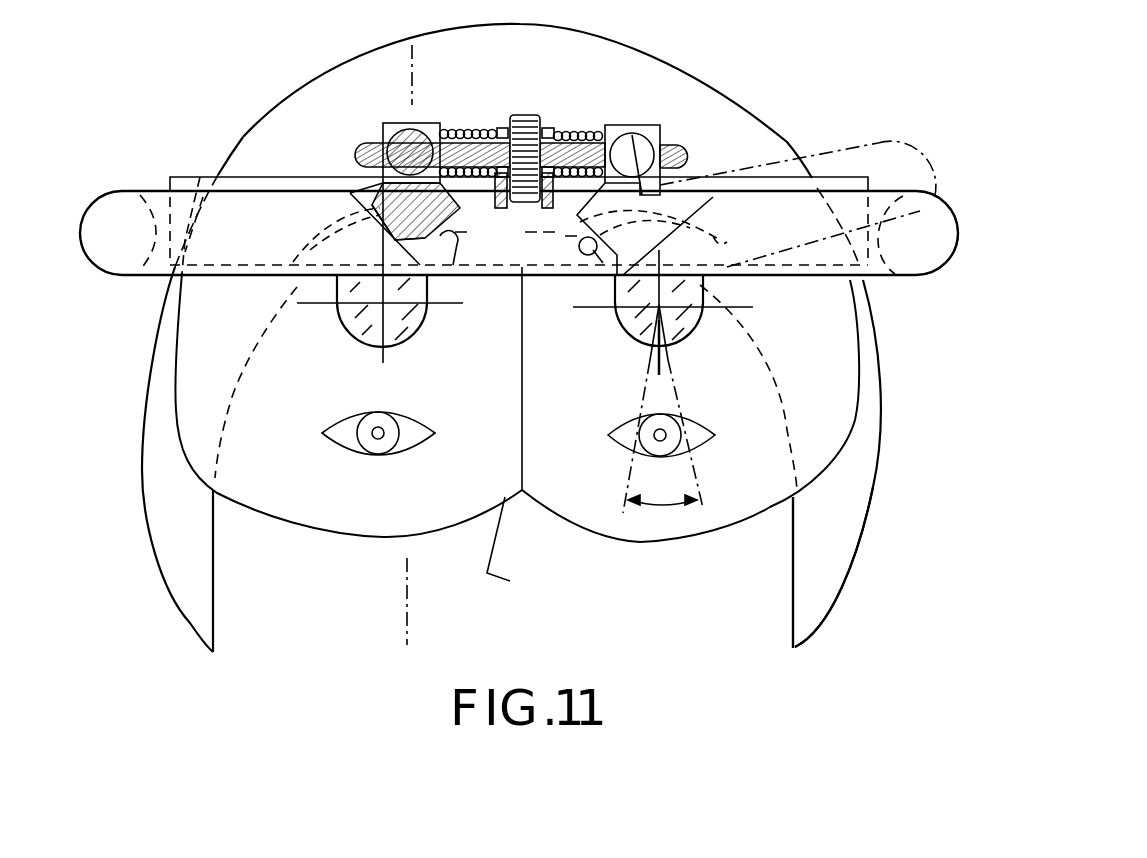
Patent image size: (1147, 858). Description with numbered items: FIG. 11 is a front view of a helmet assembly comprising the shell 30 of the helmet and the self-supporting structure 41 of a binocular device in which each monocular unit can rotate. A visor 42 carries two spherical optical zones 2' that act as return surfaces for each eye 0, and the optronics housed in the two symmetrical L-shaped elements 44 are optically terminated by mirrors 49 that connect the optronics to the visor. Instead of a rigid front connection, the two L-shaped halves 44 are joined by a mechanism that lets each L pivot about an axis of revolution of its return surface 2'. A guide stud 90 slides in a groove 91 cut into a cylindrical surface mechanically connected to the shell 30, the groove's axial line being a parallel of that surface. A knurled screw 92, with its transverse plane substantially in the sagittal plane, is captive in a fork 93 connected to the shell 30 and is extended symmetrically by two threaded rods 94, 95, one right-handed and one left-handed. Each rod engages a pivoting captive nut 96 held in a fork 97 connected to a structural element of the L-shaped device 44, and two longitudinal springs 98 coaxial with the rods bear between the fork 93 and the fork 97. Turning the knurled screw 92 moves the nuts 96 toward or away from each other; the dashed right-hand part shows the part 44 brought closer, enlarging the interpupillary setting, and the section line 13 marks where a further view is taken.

The eye of the patient 0 is at (398, 452).
The spherical optical zones 2' is at (517, 414).
The section line of FIG. 13 is at (397, 608).
The shell 30 is at (250, 303).
The self-supporting structure 41 is at (190, 176).
The visor 42 is at (740, 533).
The L-shaped elements 44 is at (916, 272).
The mirrors 49 is at (407, 328).
The guide stud 90 is at (463, 232).
The groove 91 is at (465, 272).
The knurled screw 92 is at (528, 112).
The fork 93 is at (497, 127).
The threaded rod 94 is at (352, 140).
The threaded rod 95 is at (684, 137).
The pivoting captive nut 96 is at (408, 128).
The fork 97 is at (393, 125).
The longitudinal springs 98 is at (466, 128).